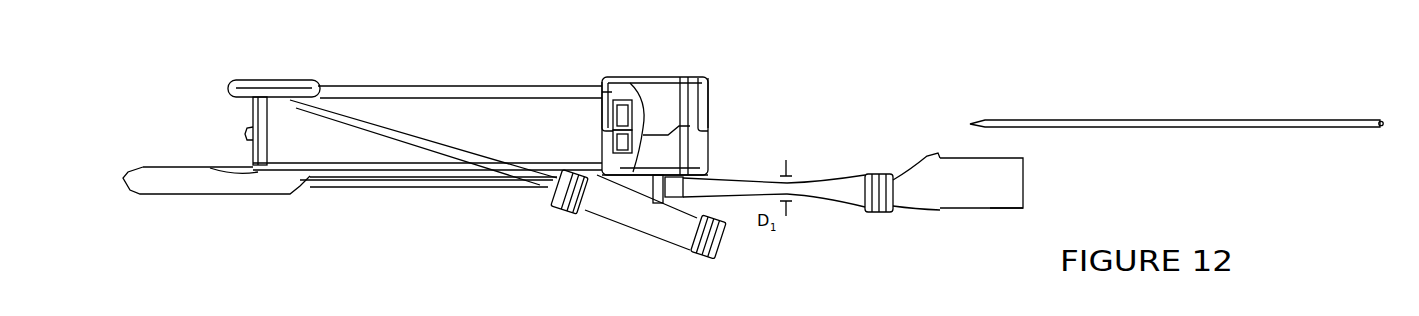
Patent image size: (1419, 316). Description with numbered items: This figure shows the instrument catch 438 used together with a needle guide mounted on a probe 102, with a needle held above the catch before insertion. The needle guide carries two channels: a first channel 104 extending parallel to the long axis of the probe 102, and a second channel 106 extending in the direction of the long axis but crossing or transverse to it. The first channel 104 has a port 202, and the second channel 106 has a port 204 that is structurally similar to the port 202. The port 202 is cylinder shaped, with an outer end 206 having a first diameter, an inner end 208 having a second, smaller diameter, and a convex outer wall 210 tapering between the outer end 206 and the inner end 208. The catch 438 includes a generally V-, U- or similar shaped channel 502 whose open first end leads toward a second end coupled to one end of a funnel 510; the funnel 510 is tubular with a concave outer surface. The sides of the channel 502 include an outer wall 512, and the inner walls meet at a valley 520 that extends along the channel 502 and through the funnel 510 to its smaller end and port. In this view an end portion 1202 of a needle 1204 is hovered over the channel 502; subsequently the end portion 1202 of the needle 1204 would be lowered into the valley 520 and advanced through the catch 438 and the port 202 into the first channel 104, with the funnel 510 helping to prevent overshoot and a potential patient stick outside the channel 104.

The probe 102 is at (393, 87).
The first channel 104 is at (363, 188).
The second channel 106 is at (508, 166).
The port 202 is at (810, 194).
The port 204 is at (648, 228).
The outer end 206 is at (870, 216).
The inner end 208 is at (787, 190).
The convex outer wall 210 is at (807, 178).
The catch 438 is at (992, 208).
The channel 502 is at (952, 142).
The funnel 510 is at (928, 172).
The outer wall 512 is at (947, 196).
The valley 520 is at (1015, 193).
The end portion 1202 is at (1012, 119).
The needle 1204 is at (1308, 93).